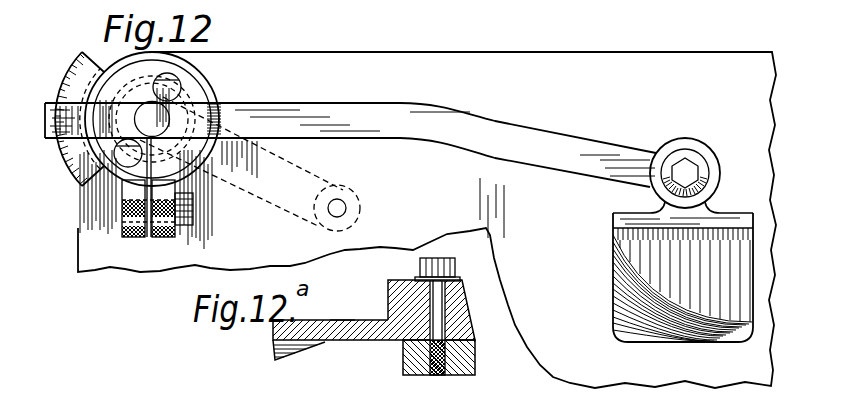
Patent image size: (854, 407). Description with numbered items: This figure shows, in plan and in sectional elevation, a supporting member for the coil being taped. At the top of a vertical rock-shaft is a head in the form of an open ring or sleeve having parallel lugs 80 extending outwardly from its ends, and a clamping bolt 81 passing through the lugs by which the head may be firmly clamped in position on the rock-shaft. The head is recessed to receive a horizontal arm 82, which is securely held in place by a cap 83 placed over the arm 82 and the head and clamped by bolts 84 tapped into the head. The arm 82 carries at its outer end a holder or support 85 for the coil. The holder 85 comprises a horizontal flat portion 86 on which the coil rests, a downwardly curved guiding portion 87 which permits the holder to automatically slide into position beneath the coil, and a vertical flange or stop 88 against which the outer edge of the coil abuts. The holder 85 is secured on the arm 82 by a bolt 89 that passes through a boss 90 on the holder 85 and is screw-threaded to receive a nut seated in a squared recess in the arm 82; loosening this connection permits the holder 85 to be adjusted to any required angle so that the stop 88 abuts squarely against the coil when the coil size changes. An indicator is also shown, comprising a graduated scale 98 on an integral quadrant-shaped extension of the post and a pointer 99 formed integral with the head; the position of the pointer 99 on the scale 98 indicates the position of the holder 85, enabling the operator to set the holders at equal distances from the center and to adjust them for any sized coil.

In FIG. 12, the parallel lugs 80 is at (170, 237).
In FIG. 12, the clamping bolt 81 is at (177, 222).
In FIG. 12, the horizontal arm 82 is at (377, 112).
In FIG. 12A, the horizontal arm 82 is at (403, 355).
In FIG. 12, the cap 83 is at (197, 97).
In FIG. 12, the bolts 84 is at (173, 83).
In FIG. 12, the holder or support 85 is at (610, 252).
In FIG. 12A, the holder or support 85 is at (340, 303).
In FIG. 12, the horizontal flat portion 86 is at (653, 255).
In FIG. 12, the downwardly curved guiding portion 87 is at (627, 312).
In FIG. 12A, the downwardly curved guiding portion 87 is at (280, 352).
In FIG. 12, the vertical flange or stop 88 is at (623, 215).
In FIG. 12A, the vertical flange or stop 88 is at (390, 287).
In FIG. 12, the bolt 89 is at (684, 173).
In FIG. 12A, the bolt 89 is at (433, 270).
In FIG. 12A, the boss 90 is at (452, 307).
In FIG. 12, the graduated scale 98 is at (73, 68).
In FIG. 12, the pointer 99 is at (75, 118).